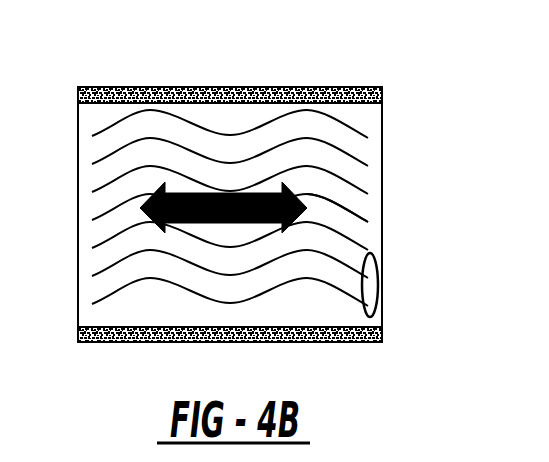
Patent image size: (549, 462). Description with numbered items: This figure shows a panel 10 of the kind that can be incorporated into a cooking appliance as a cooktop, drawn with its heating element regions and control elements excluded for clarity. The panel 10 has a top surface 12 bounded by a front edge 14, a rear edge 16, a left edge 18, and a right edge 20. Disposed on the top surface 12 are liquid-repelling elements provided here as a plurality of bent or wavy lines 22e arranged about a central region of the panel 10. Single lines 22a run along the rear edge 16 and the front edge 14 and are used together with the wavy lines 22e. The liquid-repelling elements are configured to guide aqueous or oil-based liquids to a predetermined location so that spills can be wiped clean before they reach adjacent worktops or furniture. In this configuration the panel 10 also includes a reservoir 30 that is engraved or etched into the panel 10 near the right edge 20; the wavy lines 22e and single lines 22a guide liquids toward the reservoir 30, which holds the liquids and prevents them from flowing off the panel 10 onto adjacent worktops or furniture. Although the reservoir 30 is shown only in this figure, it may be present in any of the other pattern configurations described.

The panel 10 is at (100, 147).
The top surface 12 is at (250, 118).
The front edge 14 is at (340, 343).
The rear edge 16 is at (127, 88).
The left edge 18 is at (78, 232).
The right edge 20 is at (383, 142).
The single lines 22a is at (232, 90).
The bent or wavy lines 22e is at (357, 208).
The reservoir 30 is at (378, 295).